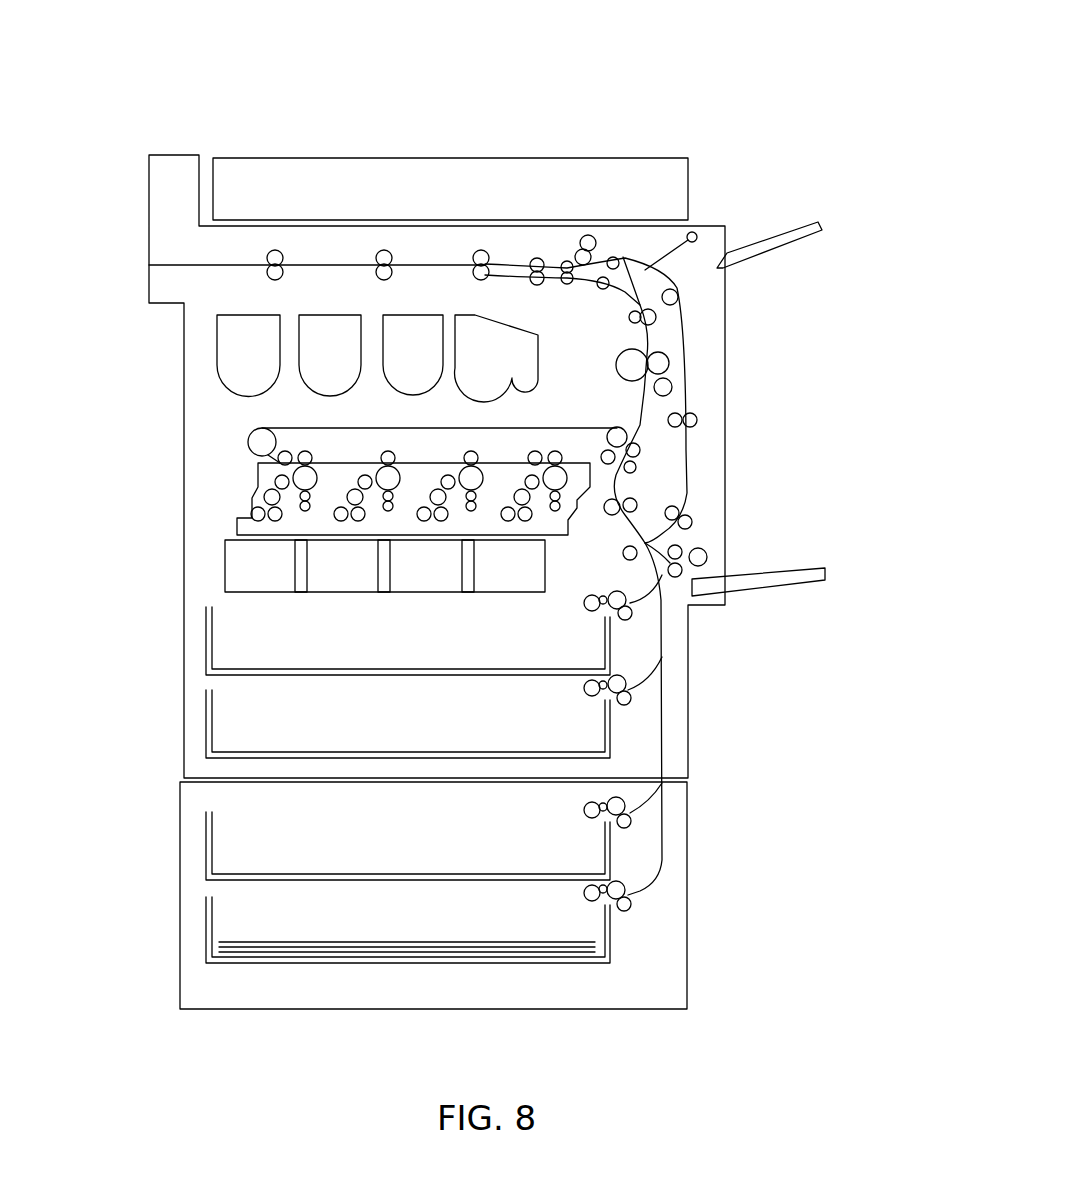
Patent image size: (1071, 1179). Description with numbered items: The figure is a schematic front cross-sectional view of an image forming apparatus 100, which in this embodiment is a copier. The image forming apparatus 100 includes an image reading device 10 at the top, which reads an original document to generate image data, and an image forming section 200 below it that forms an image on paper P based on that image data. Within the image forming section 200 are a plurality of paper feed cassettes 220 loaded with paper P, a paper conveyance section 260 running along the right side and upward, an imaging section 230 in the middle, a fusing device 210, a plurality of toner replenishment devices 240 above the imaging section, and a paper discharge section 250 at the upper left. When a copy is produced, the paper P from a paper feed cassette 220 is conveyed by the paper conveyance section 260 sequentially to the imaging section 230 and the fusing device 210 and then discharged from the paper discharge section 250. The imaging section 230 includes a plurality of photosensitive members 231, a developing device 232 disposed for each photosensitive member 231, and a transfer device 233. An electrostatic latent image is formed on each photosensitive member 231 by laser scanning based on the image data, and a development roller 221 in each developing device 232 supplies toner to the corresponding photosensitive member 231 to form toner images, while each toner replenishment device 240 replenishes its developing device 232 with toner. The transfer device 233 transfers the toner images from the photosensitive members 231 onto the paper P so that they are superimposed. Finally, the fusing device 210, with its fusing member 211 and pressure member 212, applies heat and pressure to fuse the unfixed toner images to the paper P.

The image forming apparatus 100 is at (739, 74).
The image reading device 10 is at (610, 145).
The image forming section 200 is at (781, 487).
The paper discharge section 250 is at (163, 200).
The toner replenishment device 240 is at (198, 387).
The imaging section 230 is at (122, 440).
The transfer device 233 is at (229, 442).
The developing device 232 is at (355, 483).
The photosensitive member 231 is at (318, 476).
The development roller 221 is at (274, 480).
The fusing device 210 is at (608, 390).
The fusing member 211 is at (635, 382).
The pressure member 212 is at (663, 363).
The paper conveyance section 260 is at (346, 233).
The paper feed cassette 220 is at (187, 735).
The paper P is at (257, 953).